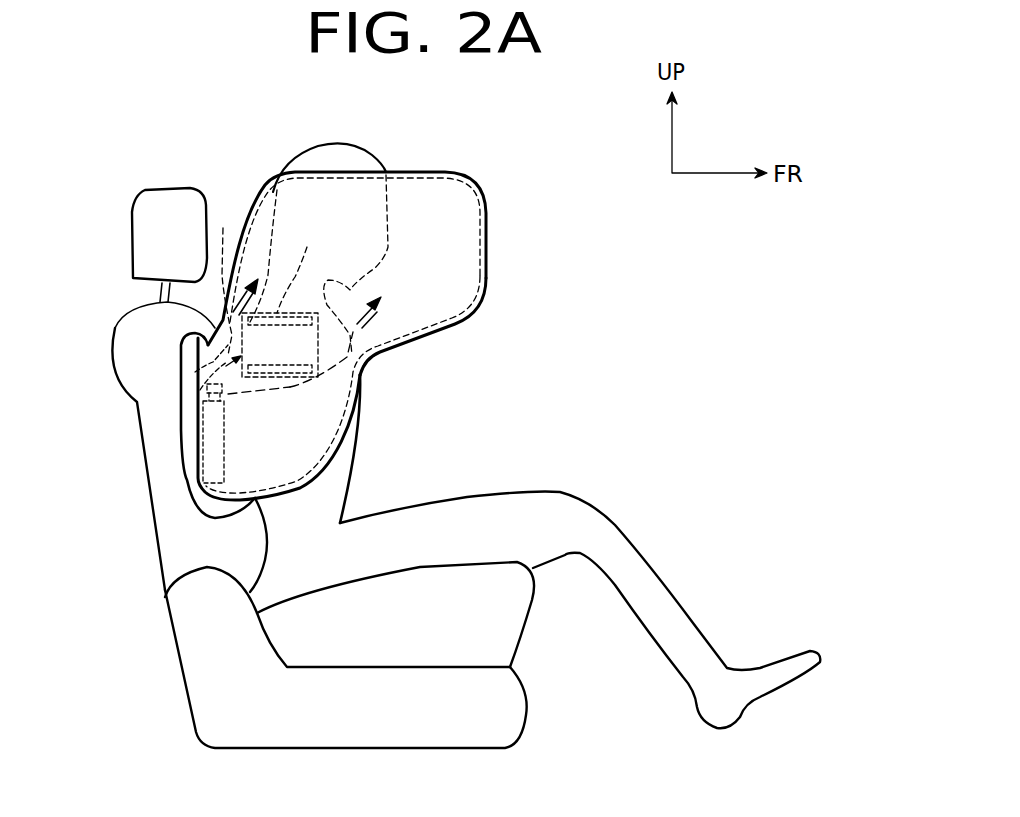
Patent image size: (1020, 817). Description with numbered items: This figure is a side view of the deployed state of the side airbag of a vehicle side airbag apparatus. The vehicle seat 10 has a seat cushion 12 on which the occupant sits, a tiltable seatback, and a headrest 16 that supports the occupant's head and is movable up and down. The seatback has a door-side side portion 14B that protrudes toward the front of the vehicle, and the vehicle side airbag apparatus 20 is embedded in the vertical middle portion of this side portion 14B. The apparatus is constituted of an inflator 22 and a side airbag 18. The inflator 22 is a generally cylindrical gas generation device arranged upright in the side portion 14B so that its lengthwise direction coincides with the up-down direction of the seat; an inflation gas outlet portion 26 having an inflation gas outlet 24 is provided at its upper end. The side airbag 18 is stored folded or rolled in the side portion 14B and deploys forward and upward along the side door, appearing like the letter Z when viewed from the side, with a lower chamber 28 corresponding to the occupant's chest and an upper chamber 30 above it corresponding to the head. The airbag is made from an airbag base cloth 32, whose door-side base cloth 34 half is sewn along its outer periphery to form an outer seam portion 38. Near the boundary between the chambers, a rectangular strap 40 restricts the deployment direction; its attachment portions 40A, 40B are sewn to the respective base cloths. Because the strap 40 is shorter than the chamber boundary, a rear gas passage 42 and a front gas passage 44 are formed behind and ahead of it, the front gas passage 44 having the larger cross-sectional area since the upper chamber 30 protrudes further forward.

The vehicle seat 10 is at (181, 700).
The seat cushion 12 is at (527, 637).
The side portion 14B is at (182, 520).
The headrest 16 is at (188, 196).
The side airbag 18 is at (487, 216).
The vehicle side airbag apparatus 20 is at (151, 454).
The inflator 22 is at (200, 467).
The inflation gas outlet 24 is at (200, 390).
The inflation gas outlet portion 26 is at (195, 372).
The lower chamber 28 is at (327, 428).
The upper chamber 30 is at (467, 261).
The airbag base cloth 32 is at (420, 306).
The door-side base cloth 34 is at (454, 334).
The outer seam portion 38 is at (485, 293).
The strap 40 is at (213, 376).
The attachment portion 40A is at (286, 296).
The attachment portion 40B is at (285, 390).
The rear gas passage 42 is at (222, 272).
The front gas passage 44 is at (368, 373).